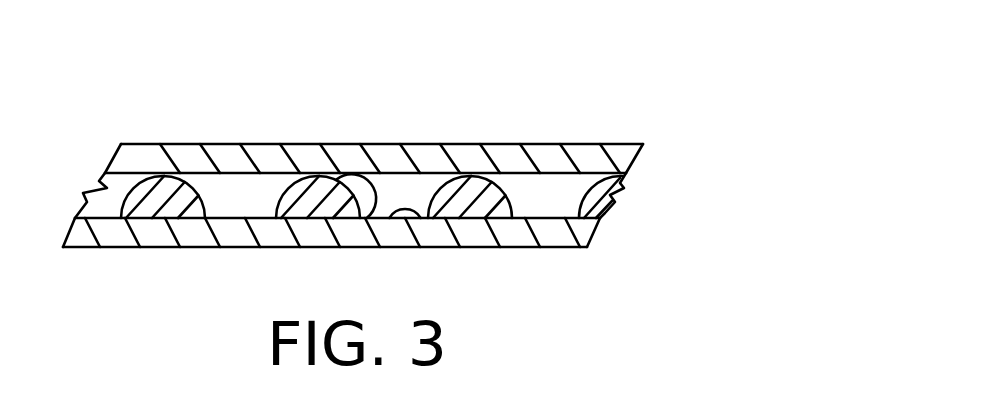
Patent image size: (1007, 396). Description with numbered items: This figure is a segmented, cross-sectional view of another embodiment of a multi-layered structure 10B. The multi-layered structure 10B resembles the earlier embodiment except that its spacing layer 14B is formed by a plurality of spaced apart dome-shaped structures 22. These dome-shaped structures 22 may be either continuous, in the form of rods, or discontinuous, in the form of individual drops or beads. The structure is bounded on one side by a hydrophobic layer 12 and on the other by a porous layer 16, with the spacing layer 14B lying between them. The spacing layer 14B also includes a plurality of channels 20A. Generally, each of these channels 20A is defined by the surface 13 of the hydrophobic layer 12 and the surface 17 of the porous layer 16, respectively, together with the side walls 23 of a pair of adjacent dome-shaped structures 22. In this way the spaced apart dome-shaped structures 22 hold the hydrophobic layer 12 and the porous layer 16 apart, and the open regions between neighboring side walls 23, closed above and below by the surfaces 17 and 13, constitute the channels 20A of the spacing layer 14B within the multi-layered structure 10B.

The multi-layered structure 10B is at (590, 91).
The hydrophobic layer 12 is at (550, 247).
The surface of the hydrophobic layer 13 is at (388, 222).
The spacing layer 14B is at (613, 207).
The porous layer 16 is at (447, 153).
The surface of the porous layer 17 is at (345, 186).
The channels 20A is at (227, 200).
The dome-shaped structures 22 is at (516, 144).
The side walls 23 is at (436, 190).